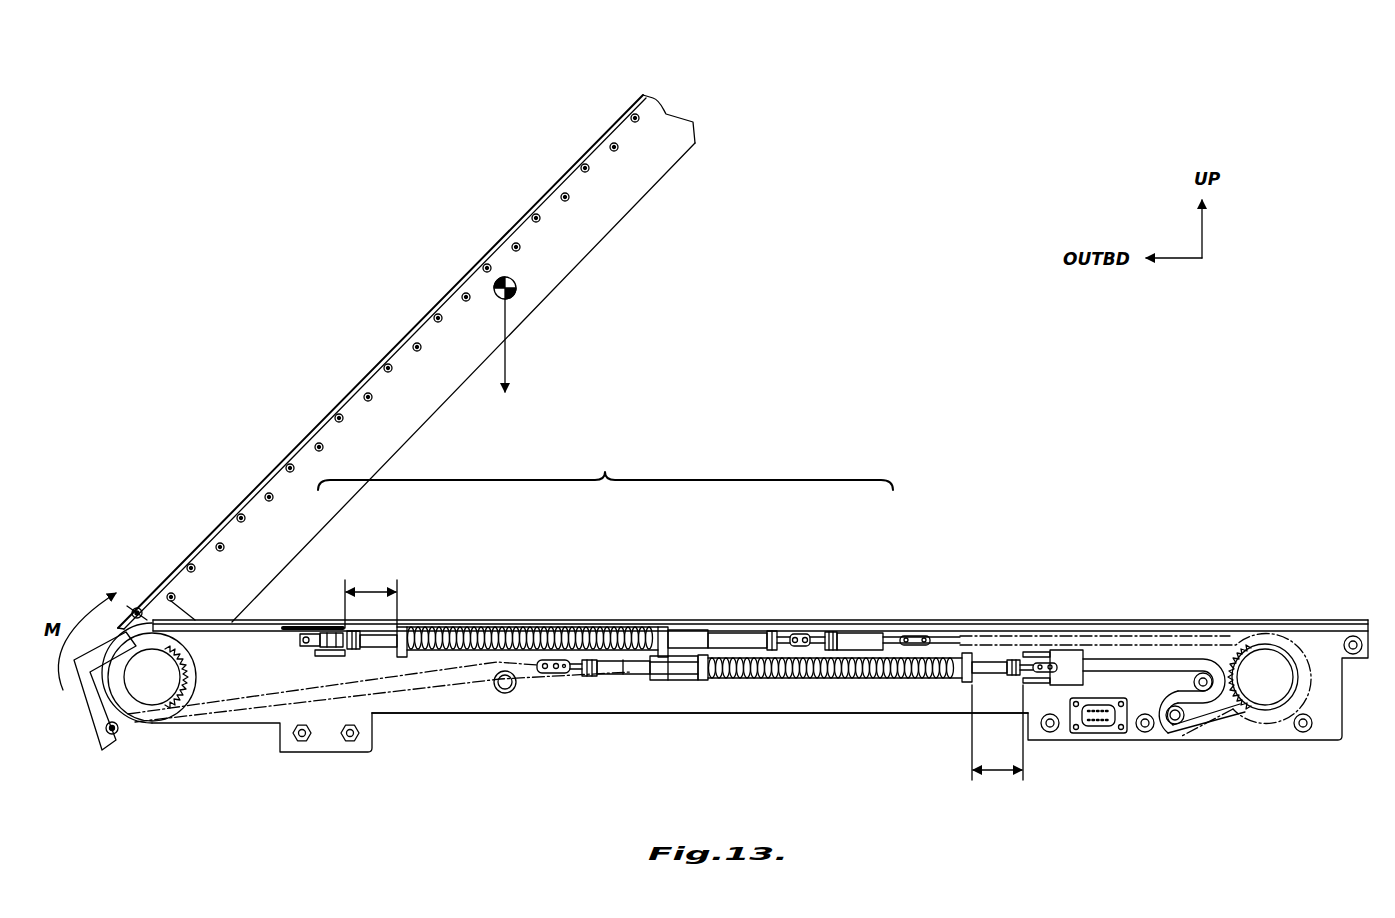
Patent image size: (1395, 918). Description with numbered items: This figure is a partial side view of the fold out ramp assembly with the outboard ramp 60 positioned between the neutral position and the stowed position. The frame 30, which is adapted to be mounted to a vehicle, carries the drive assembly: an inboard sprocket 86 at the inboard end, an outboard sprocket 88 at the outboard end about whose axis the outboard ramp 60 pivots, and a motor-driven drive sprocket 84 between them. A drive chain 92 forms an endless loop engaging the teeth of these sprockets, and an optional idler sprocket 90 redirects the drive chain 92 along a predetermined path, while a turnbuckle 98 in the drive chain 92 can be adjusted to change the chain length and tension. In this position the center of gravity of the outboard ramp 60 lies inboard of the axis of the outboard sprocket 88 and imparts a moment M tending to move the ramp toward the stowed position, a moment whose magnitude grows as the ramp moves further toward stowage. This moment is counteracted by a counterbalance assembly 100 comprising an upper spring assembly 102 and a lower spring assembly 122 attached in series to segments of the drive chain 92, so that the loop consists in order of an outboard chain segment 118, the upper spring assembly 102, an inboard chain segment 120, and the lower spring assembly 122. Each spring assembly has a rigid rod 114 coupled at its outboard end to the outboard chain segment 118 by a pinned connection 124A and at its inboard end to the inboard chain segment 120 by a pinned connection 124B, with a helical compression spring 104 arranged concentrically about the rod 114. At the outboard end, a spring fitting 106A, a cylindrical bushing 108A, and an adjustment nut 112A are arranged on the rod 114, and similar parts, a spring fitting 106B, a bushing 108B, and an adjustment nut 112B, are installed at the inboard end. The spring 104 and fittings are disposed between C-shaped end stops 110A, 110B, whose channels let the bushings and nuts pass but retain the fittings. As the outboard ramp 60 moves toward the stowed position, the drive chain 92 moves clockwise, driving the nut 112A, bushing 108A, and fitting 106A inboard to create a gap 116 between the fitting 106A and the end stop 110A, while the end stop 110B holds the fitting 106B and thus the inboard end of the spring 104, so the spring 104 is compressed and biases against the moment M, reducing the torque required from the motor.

The frame 30 is at (1342, 697).
The outboard ramp 60 is at (667, 177).
The drive sprocket 84 is at (1173, 717).
The inboard sprocket 86 is at (1233, 652).
The outboard sprocket 88 is at (183, 700).
The idler sprocket 90 is at (500, 693).
The drive chain 92 is at (1193, 637).
The turnbuckle 98 is at (862, 635).
The counterbalance assembly 100 is at (605, 468).
The upper spring assembly 102 is at (613, 570).
The helical compression spring 104 is at (490, 629).
The outboard spring fitting 106A is at (403, 629).
The inboard spring fitting 106B is at (660, 629).
The outboard cylindrical bushing 108A is at (388, 646).
The inboard bushing 108B is at (752, 633).
The outboard end stop 110A is at (341, 630).
The inboard end stop 110B is at (700, 628).
The outboard adjustment nut 112A is at (357, 641).
The inboard adjustment nut 112B is at (772, 632).
The rigid rod 114 is at (548, 637).
The gap 116 is at (379, 585).
The outboard chain segment 118 is at (240, 707).
The inboard chain segment 120 is at (1243, 723).
The lower spring assembly 122 is at (917, 718).
The outboard pinned connection 124A is at (297, 648).
The inboard pinned connection 124B is at (800, 637).